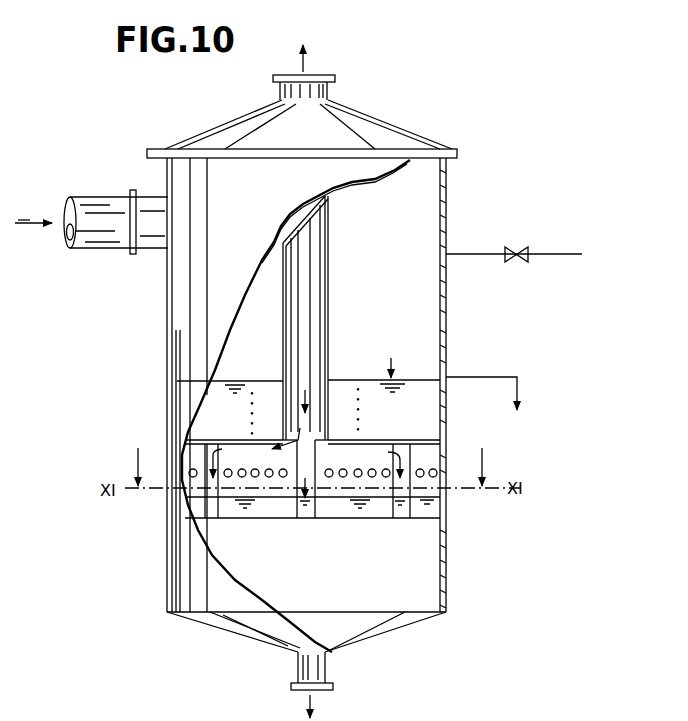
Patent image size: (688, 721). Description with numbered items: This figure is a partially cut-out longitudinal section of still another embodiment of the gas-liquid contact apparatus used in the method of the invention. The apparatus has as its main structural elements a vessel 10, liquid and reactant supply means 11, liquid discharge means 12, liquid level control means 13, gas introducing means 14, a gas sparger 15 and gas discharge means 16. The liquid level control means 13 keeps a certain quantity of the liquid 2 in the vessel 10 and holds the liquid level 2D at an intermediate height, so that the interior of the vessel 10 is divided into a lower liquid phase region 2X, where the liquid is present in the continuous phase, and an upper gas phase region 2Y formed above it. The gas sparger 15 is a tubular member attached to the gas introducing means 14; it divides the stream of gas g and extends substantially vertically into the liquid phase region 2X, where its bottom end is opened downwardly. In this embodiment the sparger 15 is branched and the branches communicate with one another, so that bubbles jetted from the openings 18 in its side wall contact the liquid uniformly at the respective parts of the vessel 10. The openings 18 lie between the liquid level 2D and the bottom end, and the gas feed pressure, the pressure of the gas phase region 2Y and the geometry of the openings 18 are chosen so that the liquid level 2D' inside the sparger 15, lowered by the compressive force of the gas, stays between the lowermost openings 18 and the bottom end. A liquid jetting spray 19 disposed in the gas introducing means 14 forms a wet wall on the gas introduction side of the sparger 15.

The liquid 2 is at (213, 413).
The liquid level 2D is at (336, 322).
The liquid level on the gas inlet side of the sparger 2D' is at (338, 496).
The liquid phase region 2X is at (337, 592).
The gas phase region 2Y is at (393, 274).
The vessel 10 is at (452, 320).
The liquid and reactant supply means 11 is at (479, 253).
The liquid discharge means 12 is at (322, 668).
The liquid level control means 13 is at (500, 375).
The gas introducing means 14 is at (103, 233).
The gas sparger 15 is at (405, 482).
The gas discharge means 16 is at (328, 90).
The openings 18 is at (253, 473).
The liquid jetting spray 19 is at (163, 193).